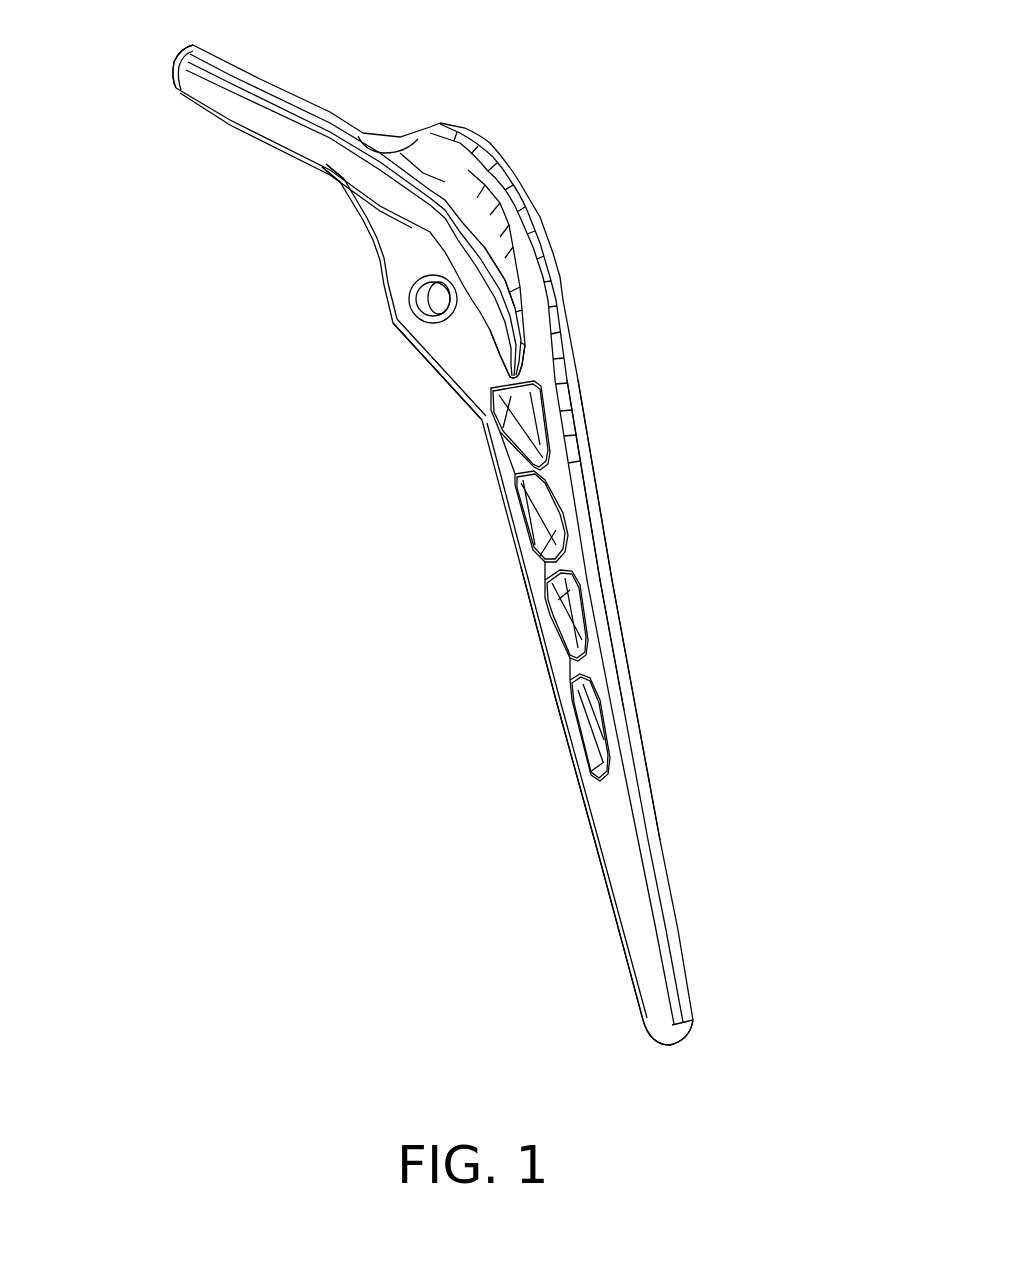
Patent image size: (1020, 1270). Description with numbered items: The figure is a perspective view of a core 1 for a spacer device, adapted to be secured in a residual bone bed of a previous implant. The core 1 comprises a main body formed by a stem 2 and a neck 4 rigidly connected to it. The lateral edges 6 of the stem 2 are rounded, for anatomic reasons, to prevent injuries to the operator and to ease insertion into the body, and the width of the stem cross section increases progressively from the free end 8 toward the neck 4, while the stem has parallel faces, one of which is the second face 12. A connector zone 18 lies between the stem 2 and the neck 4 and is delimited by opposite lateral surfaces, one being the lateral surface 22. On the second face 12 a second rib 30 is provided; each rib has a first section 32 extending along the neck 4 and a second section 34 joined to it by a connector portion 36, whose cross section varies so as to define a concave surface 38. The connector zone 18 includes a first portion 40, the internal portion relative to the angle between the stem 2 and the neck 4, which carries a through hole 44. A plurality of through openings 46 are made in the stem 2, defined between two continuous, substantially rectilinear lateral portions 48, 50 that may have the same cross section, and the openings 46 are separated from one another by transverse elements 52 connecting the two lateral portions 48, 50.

The core 1 is at (690, 122).
The stem 2 is at (573, 862).
The neck 4 is at (212, 140).
The lateral edges 6 is at (617, 672).
The free end 8 is at (648, 1037).
The second face 12 is at (637, 912).
The connector zone 18 is at (384, 336).
The lateral surface 22 is at (505, 170).
The second rib 30 is at (392, 235).
The first section 32 is at (192, 87).
The second section 34 is at (490, 360).
The connector portion 36 is at (407, 163).
The concave surface 38 is at (355, 192).
The first portion 40 is at (440, 340).
The through hole 44 is at (405, 303).
The through openings 46 is at (512, 398).
The lateral portion 48 is at (535, 590).
The lateral portion 50 is at (578, 554).
The transverse elements 52 is at (507, 463).